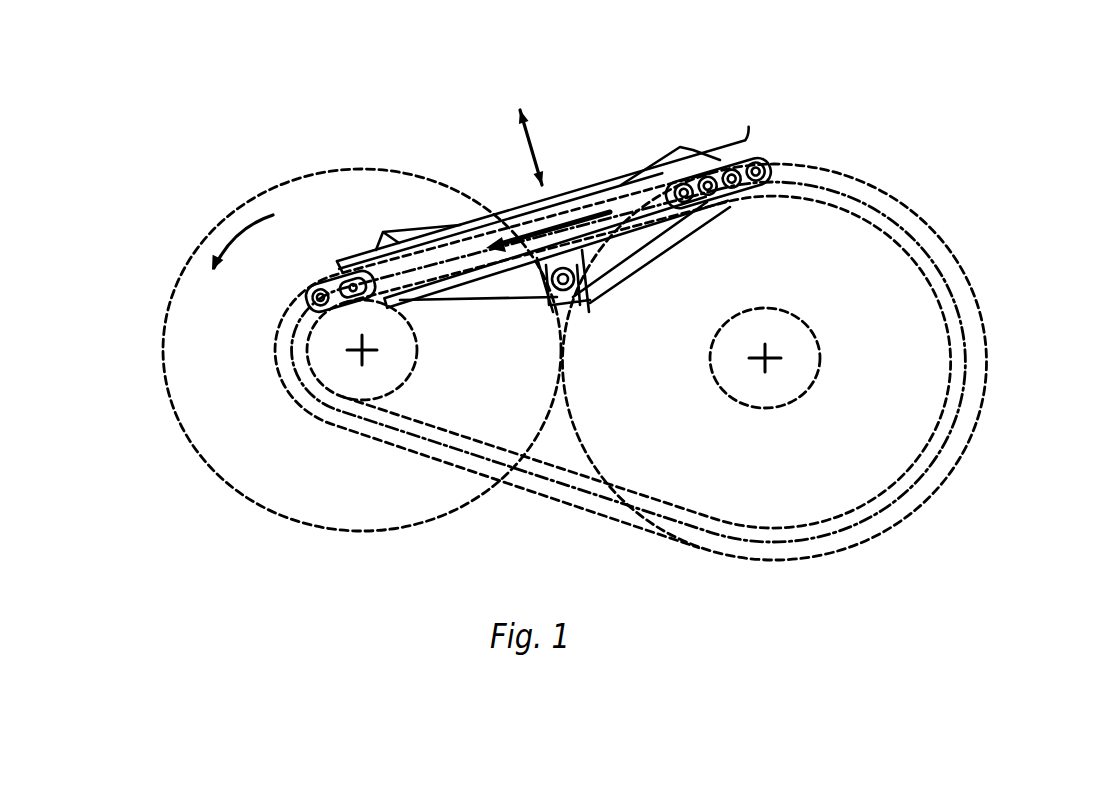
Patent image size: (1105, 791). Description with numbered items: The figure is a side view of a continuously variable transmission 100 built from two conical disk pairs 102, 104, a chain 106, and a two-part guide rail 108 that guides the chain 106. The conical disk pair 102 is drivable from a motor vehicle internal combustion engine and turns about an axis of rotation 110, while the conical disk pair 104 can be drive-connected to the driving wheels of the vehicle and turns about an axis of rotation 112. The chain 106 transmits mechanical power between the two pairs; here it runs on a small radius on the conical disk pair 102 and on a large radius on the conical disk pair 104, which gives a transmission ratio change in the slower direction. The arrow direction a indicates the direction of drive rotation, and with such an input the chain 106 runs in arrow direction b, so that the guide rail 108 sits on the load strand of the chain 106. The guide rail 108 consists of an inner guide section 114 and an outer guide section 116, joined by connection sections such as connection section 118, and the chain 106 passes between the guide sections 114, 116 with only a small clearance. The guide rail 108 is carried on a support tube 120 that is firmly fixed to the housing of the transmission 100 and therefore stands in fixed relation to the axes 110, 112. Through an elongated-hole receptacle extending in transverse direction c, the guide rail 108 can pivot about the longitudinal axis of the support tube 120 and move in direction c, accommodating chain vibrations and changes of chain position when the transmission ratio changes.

The continuously variable transmission 100 is at (185, 198).
The conical disk pair 102 is at (223, 425).
The conical disk pair 104 is at (892, 420).
The chain 106 is at (770, 166).
The guide rail 108 is at (383, 237).
The axis of rotation 110 is at (363, 352).
The axis of rotation 112 is at (770, 362).
The inner guide section 114 is at (655, 222).
The outer guide section 116 is at (620, 186).
The connection section 118 is at (520, 215).
The support tube 120 is at (568, 312).
The arrow direction a is at (242, 242).
The arrow direction b is at (531, 241).
The transverse direction c is at (536, 147).